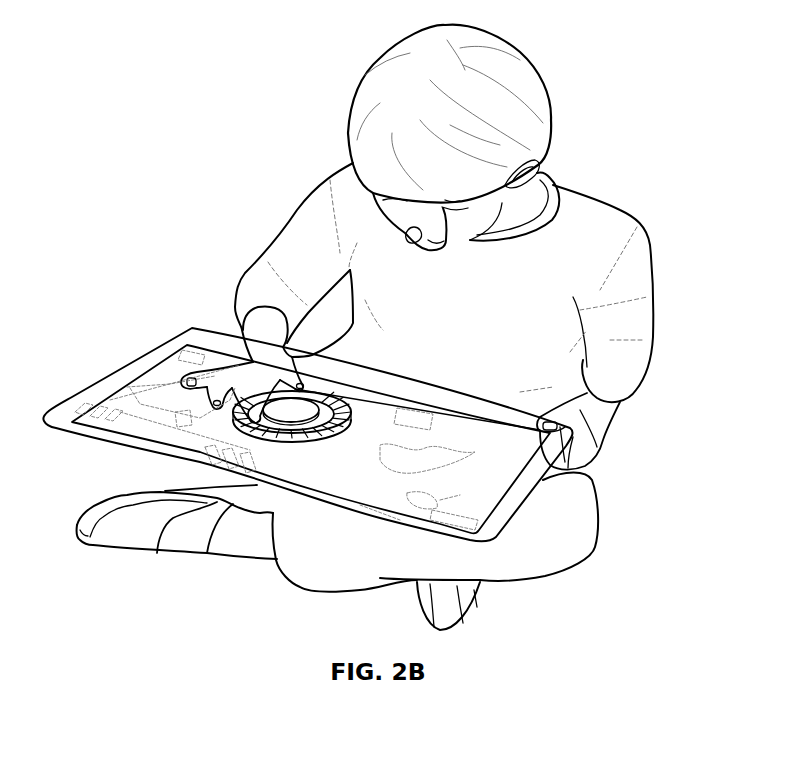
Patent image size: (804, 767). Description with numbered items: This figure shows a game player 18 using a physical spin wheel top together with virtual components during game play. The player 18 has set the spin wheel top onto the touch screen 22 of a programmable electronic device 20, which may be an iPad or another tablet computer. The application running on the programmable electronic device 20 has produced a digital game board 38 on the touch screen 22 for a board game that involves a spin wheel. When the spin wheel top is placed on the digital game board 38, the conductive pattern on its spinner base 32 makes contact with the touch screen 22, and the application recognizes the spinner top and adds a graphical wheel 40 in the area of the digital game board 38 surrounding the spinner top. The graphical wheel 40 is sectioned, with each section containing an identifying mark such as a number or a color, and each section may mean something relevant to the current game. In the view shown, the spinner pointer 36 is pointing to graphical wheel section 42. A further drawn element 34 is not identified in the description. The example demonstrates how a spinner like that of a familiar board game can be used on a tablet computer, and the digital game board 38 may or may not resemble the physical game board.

The game player 18 is at (650, 258).
The programmable electronic device 20 is at (533, 490).
The touch screen 22 is at (498, 477).
The spinner base 32 is at (352, 428).
The graduated dial markings 34 is at (260, 437).
The spinner pointer 36 is at (347, 423).
The digital game board 38 is at (183, 408).
The graphical wheel 40 is at (237, 418).
The graphical wheel section 42 is at (310, 437).